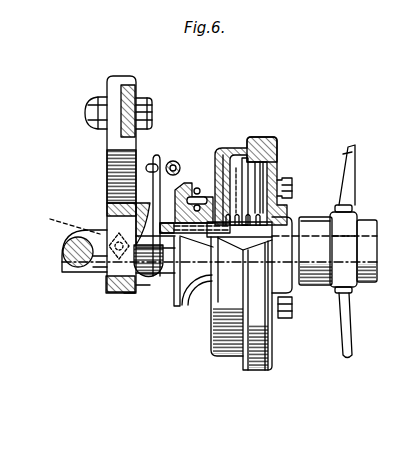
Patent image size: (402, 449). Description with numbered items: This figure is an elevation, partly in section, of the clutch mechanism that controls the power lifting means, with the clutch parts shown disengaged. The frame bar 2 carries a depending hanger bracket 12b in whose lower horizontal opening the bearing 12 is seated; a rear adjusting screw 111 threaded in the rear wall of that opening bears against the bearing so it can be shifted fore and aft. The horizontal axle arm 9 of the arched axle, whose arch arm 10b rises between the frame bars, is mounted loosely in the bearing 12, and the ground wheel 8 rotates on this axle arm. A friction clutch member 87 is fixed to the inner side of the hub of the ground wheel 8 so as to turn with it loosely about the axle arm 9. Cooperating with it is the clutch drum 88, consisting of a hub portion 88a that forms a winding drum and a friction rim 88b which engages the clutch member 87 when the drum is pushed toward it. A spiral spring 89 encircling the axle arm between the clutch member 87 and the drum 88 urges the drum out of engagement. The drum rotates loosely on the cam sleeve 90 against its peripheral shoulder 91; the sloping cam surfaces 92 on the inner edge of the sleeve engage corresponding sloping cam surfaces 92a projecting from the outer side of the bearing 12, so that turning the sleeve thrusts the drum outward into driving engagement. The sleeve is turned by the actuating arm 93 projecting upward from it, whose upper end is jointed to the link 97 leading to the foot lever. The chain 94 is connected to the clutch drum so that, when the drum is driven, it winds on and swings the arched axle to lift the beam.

The frame bar 2 is at (137, 96).
The ground wheel 8 is at (350, 335).
The horizontal axle arm 9 is at (104, 258).
The arch arm 10b is at (71, 272).
The bearing 12 is at (107, 213).
The hanger bracket 12b is at (107, 162).
The friction clutch member 87 is at (259, 137).
The clutch drum 88 is at (222, 352).
The hub portion 88a is at (203, 278).
The friction rim 88b is at (232, 148).
The spiral spring 89 is at (238, 214).
The cam sleeve 90 is at (163, 266).
The peripheral shoulder 91 is at (153, 272).
The sloping cam surfaces 92 is at (140, 276).
The sloping cam surfaces 92a is at (119, 290).
The actuating arm 93 is at (160, 157).
The chain 94 is at (199, 188).
The link 97 is at (175, 161).
The rear adjusting screw 111 is at (61, 223).